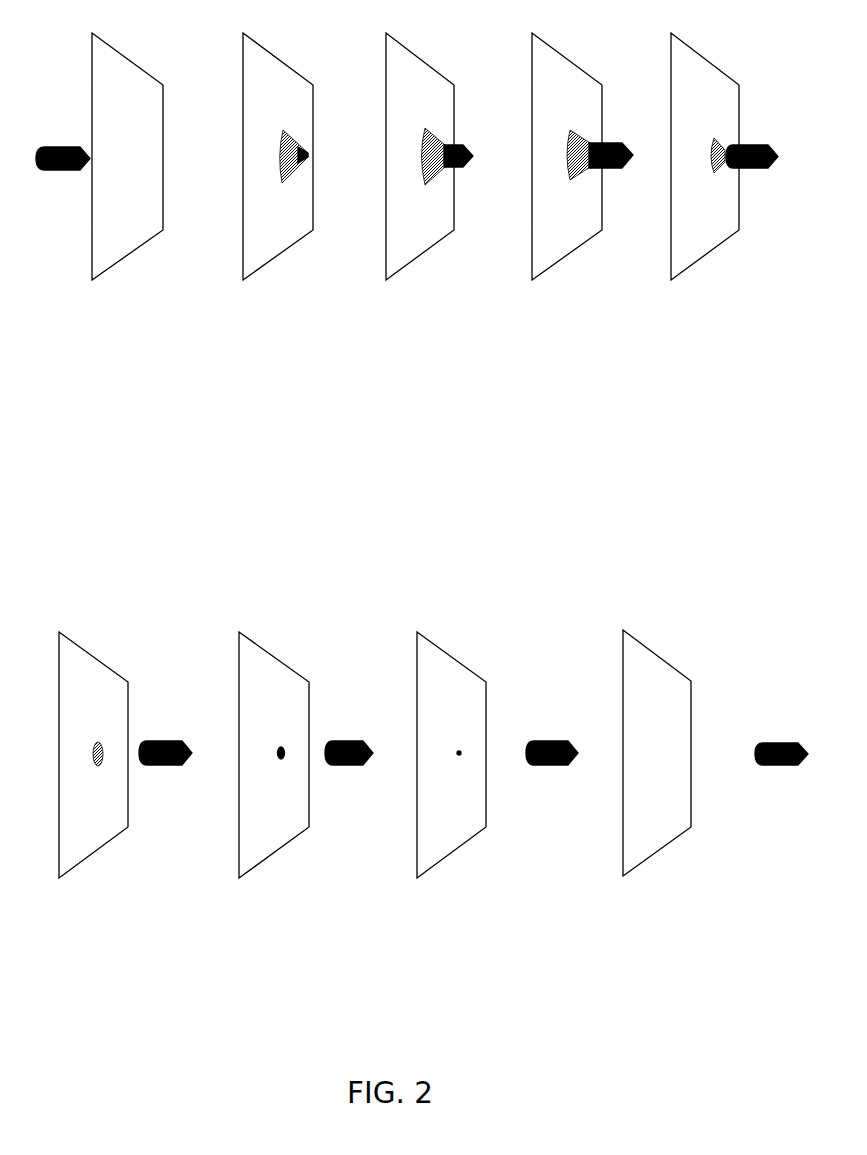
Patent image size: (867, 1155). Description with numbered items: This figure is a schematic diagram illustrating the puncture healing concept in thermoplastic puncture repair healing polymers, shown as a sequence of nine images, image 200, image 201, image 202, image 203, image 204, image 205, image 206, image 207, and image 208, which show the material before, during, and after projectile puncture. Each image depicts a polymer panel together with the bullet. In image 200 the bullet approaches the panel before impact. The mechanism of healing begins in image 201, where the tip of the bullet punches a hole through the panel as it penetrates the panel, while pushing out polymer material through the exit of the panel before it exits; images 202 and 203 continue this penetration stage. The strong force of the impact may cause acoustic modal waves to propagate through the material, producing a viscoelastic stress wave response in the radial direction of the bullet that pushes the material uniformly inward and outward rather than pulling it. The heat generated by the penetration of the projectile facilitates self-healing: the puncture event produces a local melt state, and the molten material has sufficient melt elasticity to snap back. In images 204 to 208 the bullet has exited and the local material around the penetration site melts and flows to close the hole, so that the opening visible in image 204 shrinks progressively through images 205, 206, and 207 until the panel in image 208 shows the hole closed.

The image 200 is at (143, 331).
The image 201 is at (295, 331).
The image 202 is at (437, 331).
The image 203 is at (585, 331).
The image 204 is at (722, 331).
The image 205 is at (110, 915).
The image 206 is at (290, 915).
The image 207 is at (468, 915).
The image 208 is at (673, 915).